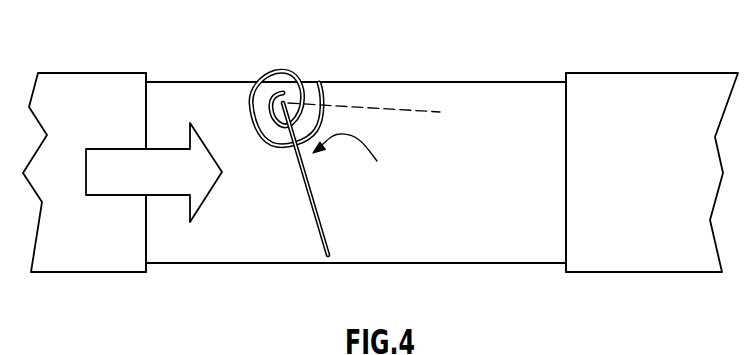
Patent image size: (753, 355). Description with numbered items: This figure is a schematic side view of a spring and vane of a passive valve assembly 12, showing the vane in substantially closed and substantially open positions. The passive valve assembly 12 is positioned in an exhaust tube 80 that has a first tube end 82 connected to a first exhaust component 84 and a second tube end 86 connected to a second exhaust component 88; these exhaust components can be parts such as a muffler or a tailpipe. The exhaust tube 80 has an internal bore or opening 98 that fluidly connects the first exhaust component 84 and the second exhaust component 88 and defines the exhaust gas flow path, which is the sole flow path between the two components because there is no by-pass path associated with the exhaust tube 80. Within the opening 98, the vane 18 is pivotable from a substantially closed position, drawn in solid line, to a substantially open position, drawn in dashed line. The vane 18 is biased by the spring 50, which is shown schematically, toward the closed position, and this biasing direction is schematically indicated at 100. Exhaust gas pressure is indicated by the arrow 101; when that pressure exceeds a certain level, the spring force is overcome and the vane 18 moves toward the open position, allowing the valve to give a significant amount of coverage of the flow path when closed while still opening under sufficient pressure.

The passive valve assembly 12 is at (356, 156).
The vane 18 is at (323, 218).
The spring 50 is at (271, 71).
The exhaust tube 80 is at (505, 82).
The first tube end 82 is at (147, 92).
The first exhaust component 84 is at (75, 102).
The second tube end 86 is at (567, 97).
The second exhaust component 88 is at (638, 103).
The internal bore or opening 98 is at (365, 263).
The spring bias indication 100 is at (366, 153).
The exhaust gas pressure arrow 101 is at (127, 196).